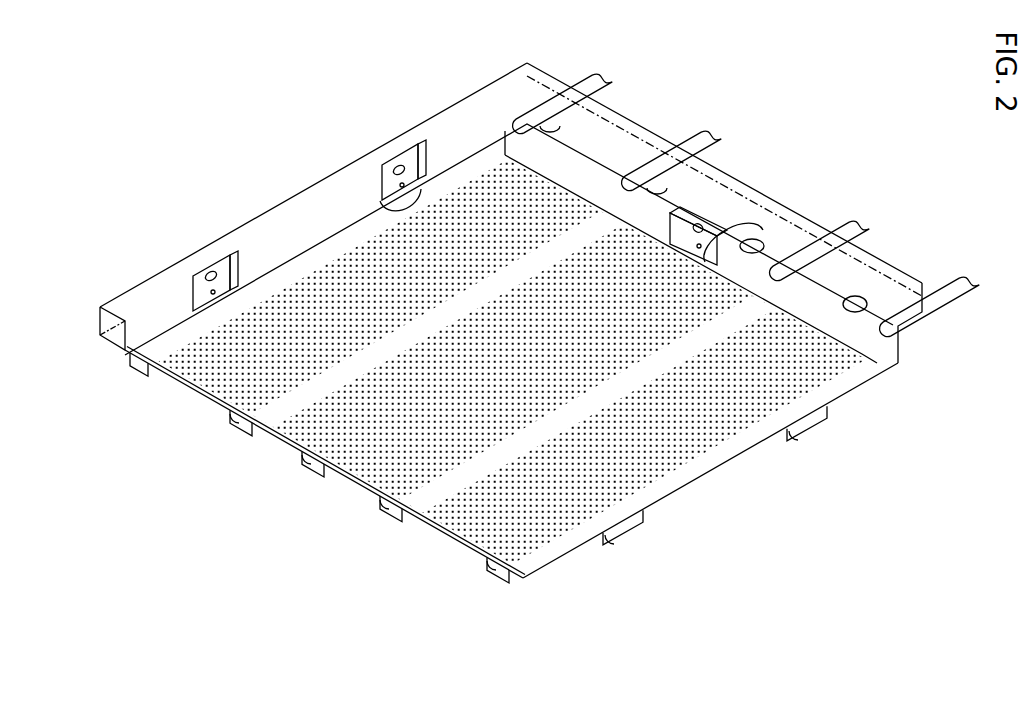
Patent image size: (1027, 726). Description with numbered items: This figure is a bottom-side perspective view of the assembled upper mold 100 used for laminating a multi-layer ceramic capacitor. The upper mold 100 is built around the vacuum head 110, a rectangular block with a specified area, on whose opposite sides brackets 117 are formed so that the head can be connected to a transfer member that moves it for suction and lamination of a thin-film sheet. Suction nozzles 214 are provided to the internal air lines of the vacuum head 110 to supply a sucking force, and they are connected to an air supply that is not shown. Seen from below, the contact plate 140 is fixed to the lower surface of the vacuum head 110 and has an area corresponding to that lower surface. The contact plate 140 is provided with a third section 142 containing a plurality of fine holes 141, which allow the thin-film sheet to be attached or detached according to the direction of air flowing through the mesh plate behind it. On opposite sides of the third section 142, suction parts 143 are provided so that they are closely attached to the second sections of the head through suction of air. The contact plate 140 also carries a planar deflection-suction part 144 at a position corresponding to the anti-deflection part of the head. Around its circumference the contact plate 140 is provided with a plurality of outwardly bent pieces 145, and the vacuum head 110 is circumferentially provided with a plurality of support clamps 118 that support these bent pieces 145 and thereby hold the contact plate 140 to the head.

The upper mold 100 is at (189, 107).
The vacuum head 110 is at (450, 104).
The brackets 117 is at (105, 304).
The support clamps 118 is at (396, 166).
The contact plate 140 is at (720, 478).
The fine holes 141 is at (697, 430).
The third section 142 is at (362, 483).
The suction parts 143 is at (145, 360).
The planar deflection-suction part 144 is at (261, 426).
The bent pieces 145 is at (385, 214).
The suction nozzle 214 is at (582, 83).